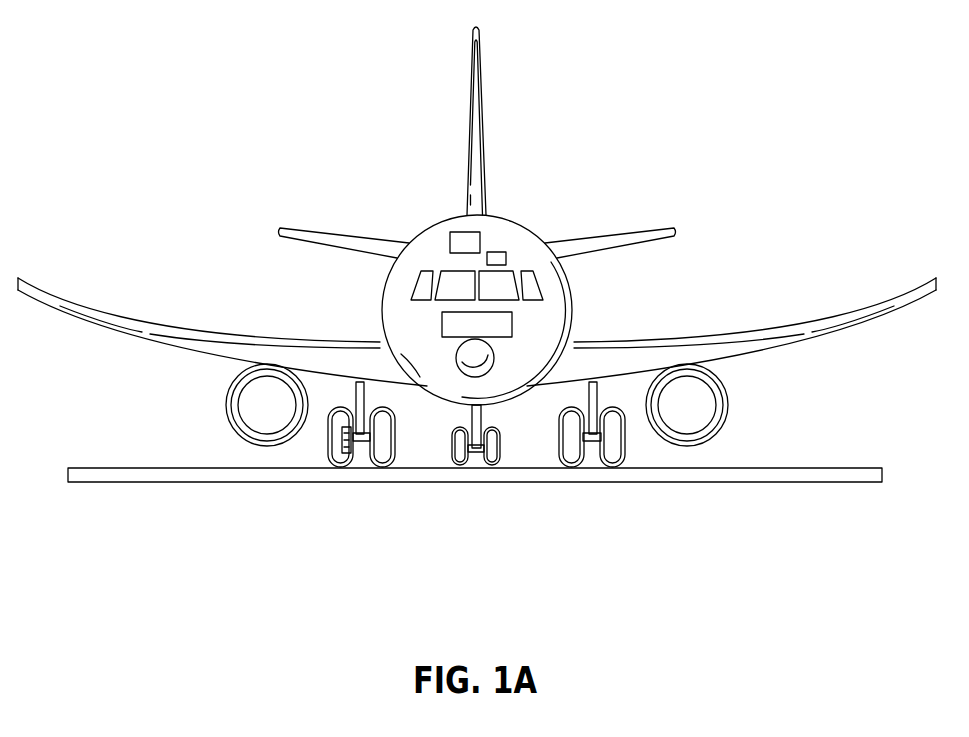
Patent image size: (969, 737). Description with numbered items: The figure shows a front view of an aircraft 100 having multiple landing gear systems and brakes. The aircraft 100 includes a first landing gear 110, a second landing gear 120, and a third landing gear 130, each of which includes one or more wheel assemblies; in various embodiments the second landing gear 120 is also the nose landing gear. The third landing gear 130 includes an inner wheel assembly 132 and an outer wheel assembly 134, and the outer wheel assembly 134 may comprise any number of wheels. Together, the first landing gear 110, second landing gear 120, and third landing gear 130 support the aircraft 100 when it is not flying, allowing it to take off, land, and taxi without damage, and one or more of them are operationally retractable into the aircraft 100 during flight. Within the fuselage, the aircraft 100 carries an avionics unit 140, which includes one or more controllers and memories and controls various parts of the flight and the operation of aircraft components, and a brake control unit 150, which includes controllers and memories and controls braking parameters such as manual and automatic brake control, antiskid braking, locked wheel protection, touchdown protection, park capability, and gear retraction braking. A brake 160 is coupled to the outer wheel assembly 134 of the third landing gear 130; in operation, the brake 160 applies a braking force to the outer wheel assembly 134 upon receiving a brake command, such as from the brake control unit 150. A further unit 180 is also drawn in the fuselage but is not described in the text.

The aircraft 100 is at (317, 69).
The first landing gear 110 is at (623, 448).
The second landing gear 120 is at (500, 453).
The third landing gear 130 is at (292, 462).
The inner wheel assembly 132 is at (387, 470).
The outer wheel assembly 134 is at (343, 469).
The avionics unit 140 is at (483, 243).
The brake control unit 150 is at (512, 326).
The brake 160 is at (345, 469).
The avionics unit 180 is at (507, 261).